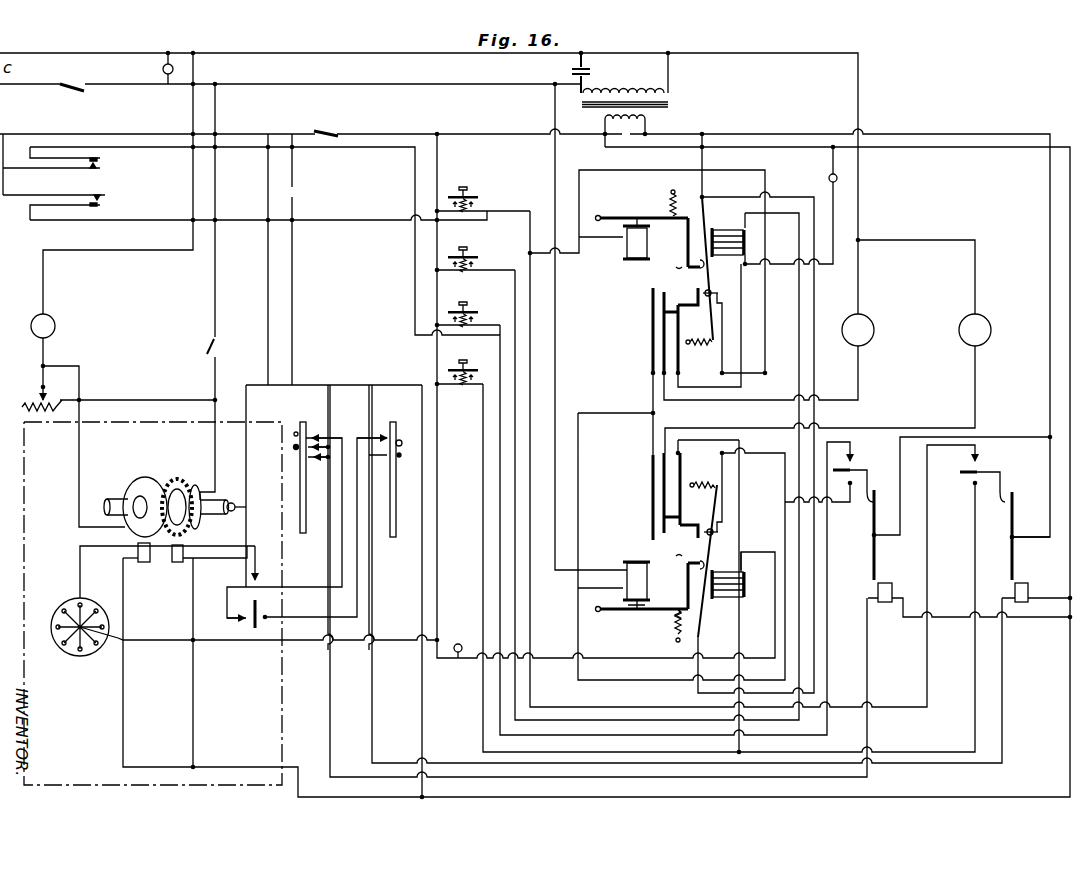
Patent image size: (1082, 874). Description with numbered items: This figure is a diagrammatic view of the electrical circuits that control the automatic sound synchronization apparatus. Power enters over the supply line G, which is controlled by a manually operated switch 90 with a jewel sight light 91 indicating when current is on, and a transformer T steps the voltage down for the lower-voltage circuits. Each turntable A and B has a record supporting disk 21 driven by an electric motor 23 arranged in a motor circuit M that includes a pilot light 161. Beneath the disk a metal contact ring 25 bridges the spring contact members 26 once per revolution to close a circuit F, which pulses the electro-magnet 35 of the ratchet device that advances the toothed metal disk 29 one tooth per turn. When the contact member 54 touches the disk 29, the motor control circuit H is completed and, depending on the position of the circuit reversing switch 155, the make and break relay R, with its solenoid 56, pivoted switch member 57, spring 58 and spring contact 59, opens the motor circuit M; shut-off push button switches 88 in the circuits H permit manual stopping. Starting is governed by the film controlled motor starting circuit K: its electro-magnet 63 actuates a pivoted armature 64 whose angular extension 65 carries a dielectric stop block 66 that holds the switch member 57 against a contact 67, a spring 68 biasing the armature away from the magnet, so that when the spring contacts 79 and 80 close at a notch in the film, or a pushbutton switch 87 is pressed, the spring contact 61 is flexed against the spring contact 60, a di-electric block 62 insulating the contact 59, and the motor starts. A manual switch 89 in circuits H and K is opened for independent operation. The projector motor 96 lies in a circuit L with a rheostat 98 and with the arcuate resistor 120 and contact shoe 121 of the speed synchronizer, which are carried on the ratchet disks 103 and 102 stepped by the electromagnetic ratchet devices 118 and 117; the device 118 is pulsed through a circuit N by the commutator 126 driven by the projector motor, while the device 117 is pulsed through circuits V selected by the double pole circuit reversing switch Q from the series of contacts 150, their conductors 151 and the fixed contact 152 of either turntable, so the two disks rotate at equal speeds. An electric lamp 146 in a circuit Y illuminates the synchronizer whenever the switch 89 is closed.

The jewel sight light 91 is at (162, 69).
The manually operated switch 90 is at (78, 90).
The manual switch 89 is at (330, 128).
The spring contact 79 is at (105, 158).
The spring contact 80 is at (105, 170).
The pushbutton switch 87 is at (470, 190).
The shut-off push button switch 88 is at (474, 255).
The pilot light 161 is at (829, 177).
The electric motor 96 is at (55, 315).
The rheostat 98 is at (38, 392).
The contact shoe 121 is at (130, 490).
The ratchet disk 102 is at (150, 477).
The ratchet disk 103 is at (173, 479).
The arcuate resistor 120 is at (192, 484).
The electric lamp 146 is at (231, 512).
The electromagnetic ratchet device 117 is at (172, 563).
The electromagnetic ratchet device 118 is at (140, 565).
The make and break commutator 126 is at (72, 658).
The record supporting disk 21 is at (298, 513).
The contacts 150 is at (304, 436).
The conductors 151 is at (294, 444).
The fixed contact 152 is at (312, 436).
The metal contact ring 25 is at (298, 452).
The spring contact member 26 is at (312, 446).
The spring contact 60 is at (650, 303).
The spring contact 61 is at (662, 322).
The di-electric block 62 is at (694, 296).
The electro-magnet 63 is at (632, 260).
The pivoted armature 64 is at (634, 217).
The angular extension 65 is at (686, 232).
The stop block 66 is at (697, 259).
The contact 67 is at (726, 318).
The spring 68 is at (670, 197).
The solenoid 56 is at (726, 229).
The pivoted switch member 57 is at (678, 269).
The spring 58 is at (700, 346).
The spring contact 59 is at (704, 478).
The electric motor 23 is at (872, 322).
The circuit reversing switch 155 is at (856, 464).
The contact member 54 is at (867, 498).
The metal disk 29 is at (872, 548).
The electro-magnet 35 is at (892, 584).
The electrical power supply line G is at (238, 53).
The transformer T is at (615, 90).
The film controlled motor starting circuit K is at (574, 256).
The motor circuit M is at (862, 278).
The electric motor control circuit H is at (797, 368).
The make and break relay R is at (714, 290).
The electrical circuit L is at (82, 377).
The electric circuit N is at (100, 566).
The double pole circuit reversing switch Q is at (246, 618).
The circuit Y is at (250, 470).
The phonograph record turntable A is at (305, 530).
The phonograph record turntable B is at (398, 532).
The circuit V is at (302, 583).
The circuit F is at (373, 616).